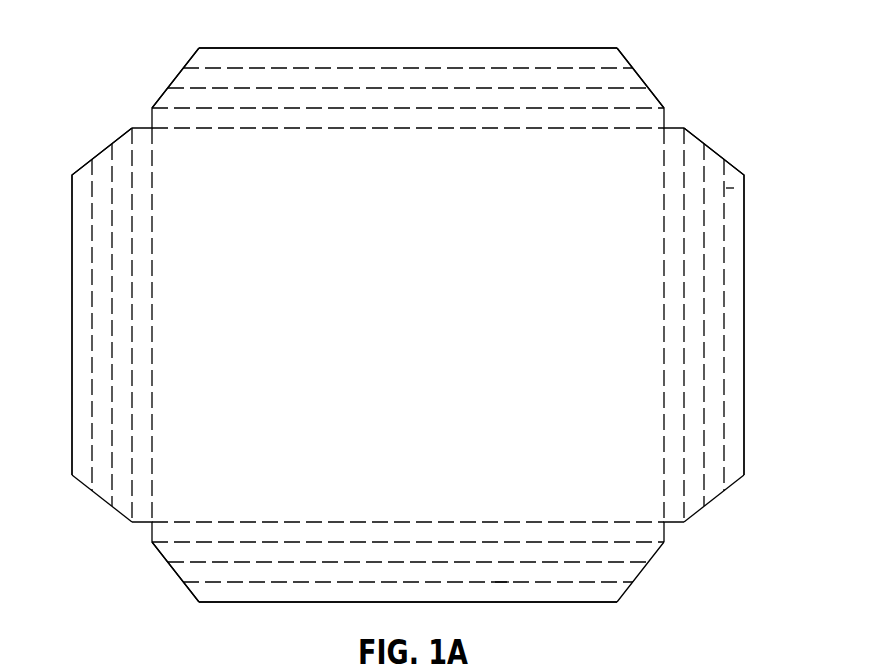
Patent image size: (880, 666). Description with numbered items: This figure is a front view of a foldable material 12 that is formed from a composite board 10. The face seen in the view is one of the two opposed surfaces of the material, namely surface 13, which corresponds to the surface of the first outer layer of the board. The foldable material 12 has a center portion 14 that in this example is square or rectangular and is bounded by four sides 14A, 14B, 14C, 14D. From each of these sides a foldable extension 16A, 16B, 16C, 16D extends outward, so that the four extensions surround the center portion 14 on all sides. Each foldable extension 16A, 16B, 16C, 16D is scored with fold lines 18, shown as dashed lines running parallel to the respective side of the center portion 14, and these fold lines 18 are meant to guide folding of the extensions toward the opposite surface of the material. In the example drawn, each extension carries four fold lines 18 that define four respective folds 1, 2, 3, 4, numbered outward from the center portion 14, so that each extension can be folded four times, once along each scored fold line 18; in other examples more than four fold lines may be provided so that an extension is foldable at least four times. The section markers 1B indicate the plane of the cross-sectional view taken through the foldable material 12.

The composite board 10 is at (419, 337).
The foldable material 12 is at (419, 337).
The opposed surface 13 is at (622, 502).
The center portion 14 is at (407, 324).
The side of center portion 14A is at (665, 350).
The side of center portion 14B is at (545, 128).
The side of center portion 14C is at (152, 175).
The side of center portion 14D is at (227, 523).
The foldable extension 16A is at (717, 503).
The foldable extension 16B is at (648, 77).
The foldable extension 16C is at (101, 498).
The foldable extension 16D is at (578, 604).
The fold line 18 is at (744, 178).
The first fold 1 is at (414, 342).
The second fold 2 is at (407, 324).
The third fold 3 is at (407, 323).
The fourth fold 4 is at (407, 324).
The section line 1B is at (72, 255).